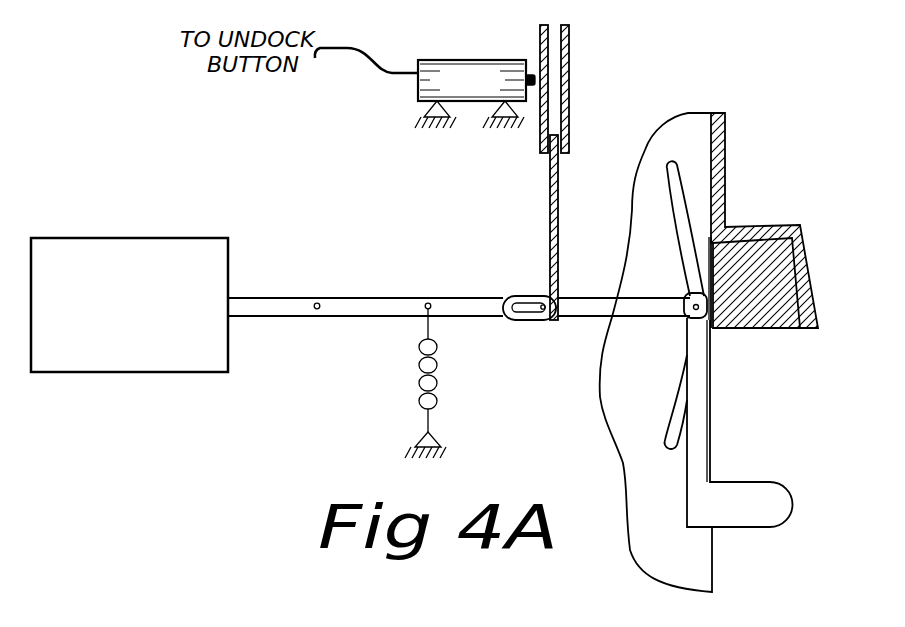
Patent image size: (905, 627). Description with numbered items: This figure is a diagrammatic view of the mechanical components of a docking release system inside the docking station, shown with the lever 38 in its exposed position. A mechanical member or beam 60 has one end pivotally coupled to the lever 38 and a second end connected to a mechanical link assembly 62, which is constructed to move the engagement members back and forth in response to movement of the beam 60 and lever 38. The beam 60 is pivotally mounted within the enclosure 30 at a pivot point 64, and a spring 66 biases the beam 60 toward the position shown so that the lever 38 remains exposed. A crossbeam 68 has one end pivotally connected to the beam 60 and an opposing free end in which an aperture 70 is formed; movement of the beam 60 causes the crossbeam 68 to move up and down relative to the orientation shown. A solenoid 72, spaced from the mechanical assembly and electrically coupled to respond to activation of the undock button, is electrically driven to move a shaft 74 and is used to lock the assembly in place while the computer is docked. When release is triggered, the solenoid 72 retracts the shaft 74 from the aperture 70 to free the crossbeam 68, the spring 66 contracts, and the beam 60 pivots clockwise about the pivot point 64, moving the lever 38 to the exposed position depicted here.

The enclosure 30 is at (747, 228).
The lever 38 is at (695, 433).
The beam 60 is at (293, 300).
The mechanical link assembly 62 is at (160, 245).
The pivot point 64 is at (318, 300).
The spring 66 is at (437, 393).
The crossbeam 68 is at (557, 274).
The aperture 70 is at (556, 195).
The solenoid 72 is at (459, 70).
The shaft 74 is at (531, 75).